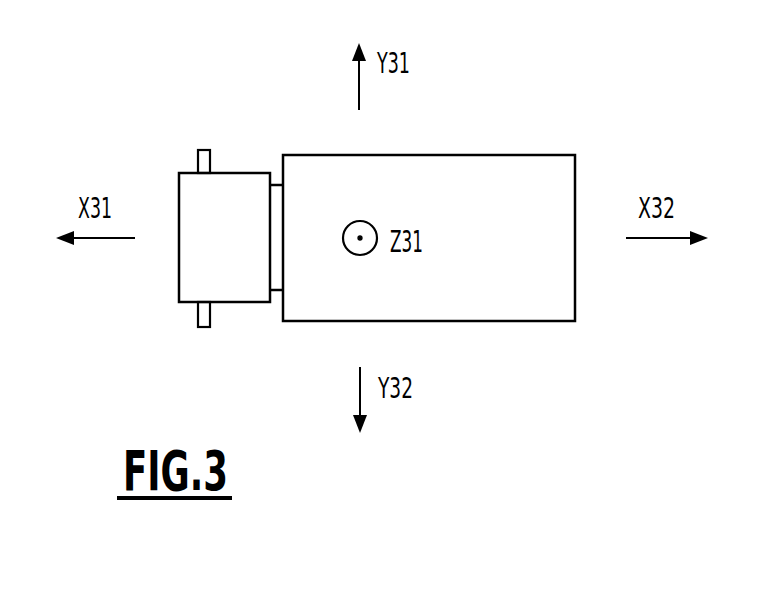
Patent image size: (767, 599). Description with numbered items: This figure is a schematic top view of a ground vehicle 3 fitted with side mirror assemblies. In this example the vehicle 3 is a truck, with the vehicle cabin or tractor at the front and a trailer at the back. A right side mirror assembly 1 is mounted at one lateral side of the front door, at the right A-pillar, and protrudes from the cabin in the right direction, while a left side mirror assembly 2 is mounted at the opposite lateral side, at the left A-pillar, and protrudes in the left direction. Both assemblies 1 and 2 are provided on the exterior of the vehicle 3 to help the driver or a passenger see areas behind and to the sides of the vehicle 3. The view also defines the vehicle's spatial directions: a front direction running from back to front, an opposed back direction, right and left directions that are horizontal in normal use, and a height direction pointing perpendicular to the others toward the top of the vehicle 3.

The right side mirror assembly 1 is at (204, 160).
The left side mirror assembly 2 is at (203, 318).
The ground vehicle 3 is at (467, 373).